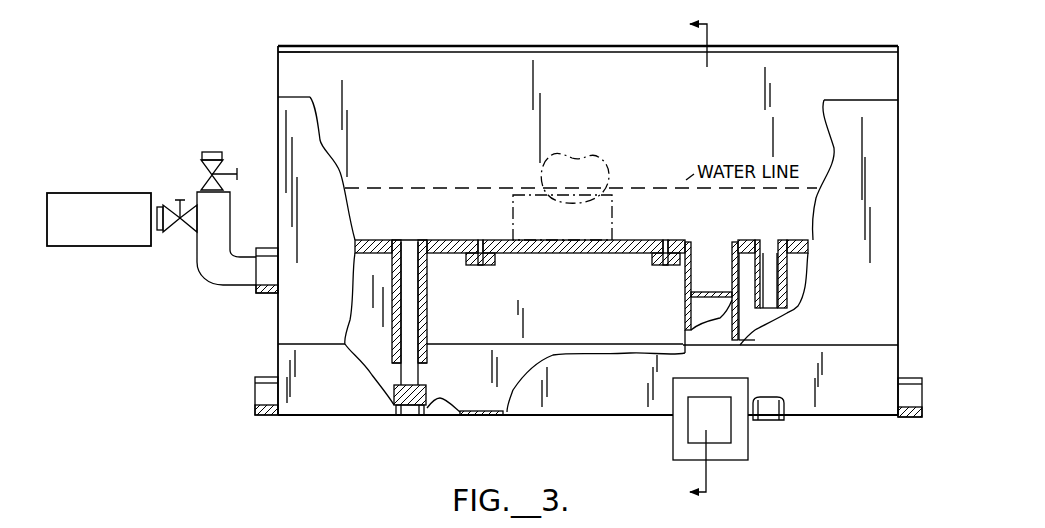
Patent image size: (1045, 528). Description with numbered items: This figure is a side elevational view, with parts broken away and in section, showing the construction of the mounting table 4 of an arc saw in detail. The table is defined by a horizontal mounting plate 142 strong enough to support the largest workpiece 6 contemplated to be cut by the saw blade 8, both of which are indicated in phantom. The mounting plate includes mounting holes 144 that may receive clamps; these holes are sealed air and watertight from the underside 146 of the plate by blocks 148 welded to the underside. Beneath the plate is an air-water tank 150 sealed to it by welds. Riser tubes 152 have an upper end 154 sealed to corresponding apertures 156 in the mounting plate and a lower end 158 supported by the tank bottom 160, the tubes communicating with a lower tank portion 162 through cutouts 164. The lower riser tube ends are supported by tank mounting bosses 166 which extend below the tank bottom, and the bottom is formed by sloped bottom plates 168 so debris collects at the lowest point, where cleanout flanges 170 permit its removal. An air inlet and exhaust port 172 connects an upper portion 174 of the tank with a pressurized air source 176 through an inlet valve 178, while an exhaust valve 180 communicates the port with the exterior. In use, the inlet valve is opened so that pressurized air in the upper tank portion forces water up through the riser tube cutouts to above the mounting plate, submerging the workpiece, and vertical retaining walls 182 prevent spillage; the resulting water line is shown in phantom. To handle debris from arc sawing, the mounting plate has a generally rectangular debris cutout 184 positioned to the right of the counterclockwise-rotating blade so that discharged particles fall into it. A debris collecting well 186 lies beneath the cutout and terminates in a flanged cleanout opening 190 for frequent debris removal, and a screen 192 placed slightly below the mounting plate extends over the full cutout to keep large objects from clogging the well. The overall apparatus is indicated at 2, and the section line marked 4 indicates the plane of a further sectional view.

The apparatus 2 is at (906, 194).
The mounting table 4 is at (686, 258).
The workpiece 6 is at (615, 210).
The saw blade 8 is at (612, 170).
The mounting plate 142 is at (382, 240).
The mounting holes 144 is at (481, 240).
The underside 146 is at (525, 253).
The blocks 148 is at (470, 265).
The air-water tank 150 is at (275, 356).
The riser tubes 152 is at (427, 318).
The upper end 154 is at (410, 242).
The apertures 156 is at (402, 240).
The lower end 158 is at (428, 395).
The tank bottom 160 is at (562, 417).
The lower tank portion 162 is at (487, 415).
The cutouts 164 is at (423, 370).
The tank mounting bosses 166 is at (395, 410).
The sloped bottom plates 168 is at (860, 385).
The cleanout flanges 170 is at (268, 417).
The air inlet and exhaust port 172 is at (265, 248).
The upper portion 174 is at (368, 262).
The pressurized air source 176 is at (107, 193).
The inlet valve 178 is at (175, 233).
The exhaust valve 180 is at (214, 153).
The vertical retaining walls 182 is at (292, 67).
The debris cutout 184 is at (716, 240).
The debris collecting well 186 is at (690, 322).
The flanged cleanout opening 190 is at (720, 418).
The screen 192 is at (700, 253).